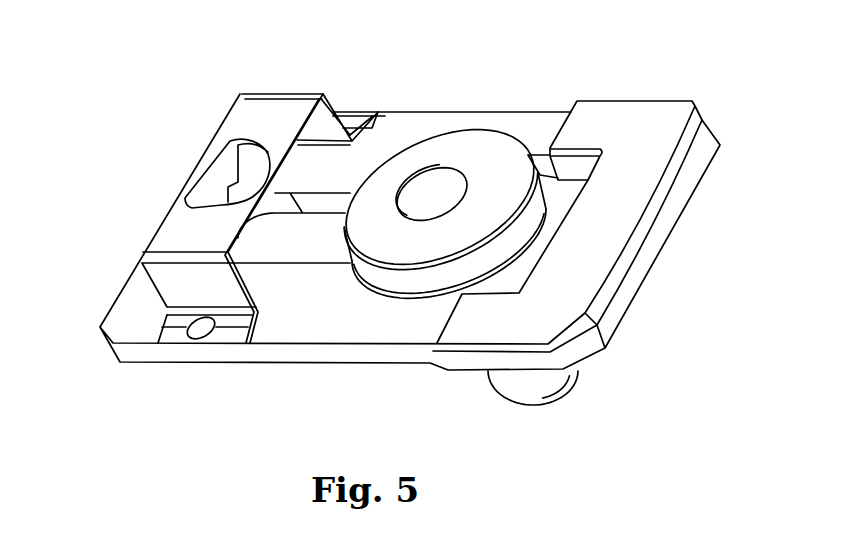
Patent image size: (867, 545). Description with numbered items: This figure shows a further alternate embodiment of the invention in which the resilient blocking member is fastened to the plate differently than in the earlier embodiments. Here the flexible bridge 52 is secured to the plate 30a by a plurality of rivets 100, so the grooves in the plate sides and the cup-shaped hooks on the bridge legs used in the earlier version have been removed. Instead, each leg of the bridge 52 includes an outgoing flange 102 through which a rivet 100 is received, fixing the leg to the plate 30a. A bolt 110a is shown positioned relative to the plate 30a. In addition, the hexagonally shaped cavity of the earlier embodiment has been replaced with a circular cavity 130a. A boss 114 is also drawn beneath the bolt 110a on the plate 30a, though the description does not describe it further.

The plate 30a is at (375, 367).
The bridge 52 is at (185, 238).
The rivet 100 is at (200, 331).
The outgoing flange 102 is at (223, 336).
The bolt 110a is at (477, 155).
The boss 114 is at (510, 273).
The circular cavity 130a is at (438, 185).